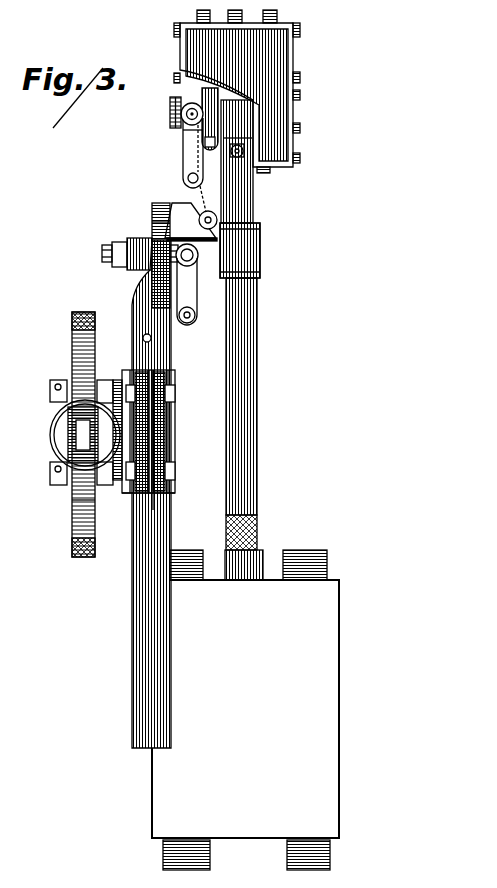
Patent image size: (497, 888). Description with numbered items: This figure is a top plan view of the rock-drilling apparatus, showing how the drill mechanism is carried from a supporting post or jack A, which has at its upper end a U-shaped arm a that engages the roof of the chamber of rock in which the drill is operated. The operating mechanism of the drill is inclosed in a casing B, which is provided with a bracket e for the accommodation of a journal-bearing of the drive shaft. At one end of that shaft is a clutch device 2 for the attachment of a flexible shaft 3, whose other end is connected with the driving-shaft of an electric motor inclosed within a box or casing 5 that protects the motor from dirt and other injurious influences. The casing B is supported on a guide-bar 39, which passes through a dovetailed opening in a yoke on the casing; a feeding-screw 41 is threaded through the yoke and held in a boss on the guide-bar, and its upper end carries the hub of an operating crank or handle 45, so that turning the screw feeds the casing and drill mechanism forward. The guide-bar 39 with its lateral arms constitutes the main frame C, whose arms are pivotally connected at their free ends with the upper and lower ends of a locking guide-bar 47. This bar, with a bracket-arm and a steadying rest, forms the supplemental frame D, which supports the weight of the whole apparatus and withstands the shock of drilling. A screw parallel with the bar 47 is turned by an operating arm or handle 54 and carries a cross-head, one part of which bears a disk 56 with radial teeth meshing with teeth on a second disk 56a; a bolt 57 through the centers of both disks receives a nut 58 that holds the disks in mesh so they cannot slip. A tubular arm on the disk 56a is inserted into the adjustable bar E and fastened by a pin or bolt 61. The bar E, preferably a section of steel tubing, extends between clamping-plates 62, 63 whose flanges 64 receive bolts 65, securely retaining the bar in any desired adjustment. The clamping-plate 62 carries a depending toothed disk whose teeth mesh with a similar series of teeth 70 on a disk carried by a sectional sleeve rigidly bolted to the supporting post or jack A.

The casing B is at (263, 123).
The bracket e is at (254, 200).
The locking guide-bar 47 is at (262, 238).
The clutch device 2 is at (261, 262).
The flexible shaft 3 is at (259, 312).
The box or casing 5 is at (245, 710).
The adjustable bar E is at (133, 648).
The disk 56 is at (167, 203).
The disk 56a is at (157, 222).
The bolt 57 is at (103, 250).
The nut 58 is at (123, 268).
The supplemental frame D is at (191, 207).
The operating arm or handle 54 is at (192, 300).
The guide-bar 39 is at (187, 100).
The operating crank or handle 45 is at (188, 158).
The feeding-screw 41 is at (182, 138).
The main frame C is at (177, 117).
The pin or bolt 61 is at (152, 339).
The clamping-plate 63 is at (172, 428).
The bolts 65 is at (175, 390).
The clamping-plate 62 is at (127, 495).
The flanges 64 is at (163, 510).
The teeth 70 is at (113, 490).
The supporting post or jack A is at (53, 442).
The U-shaped arm a is at (68, 500).